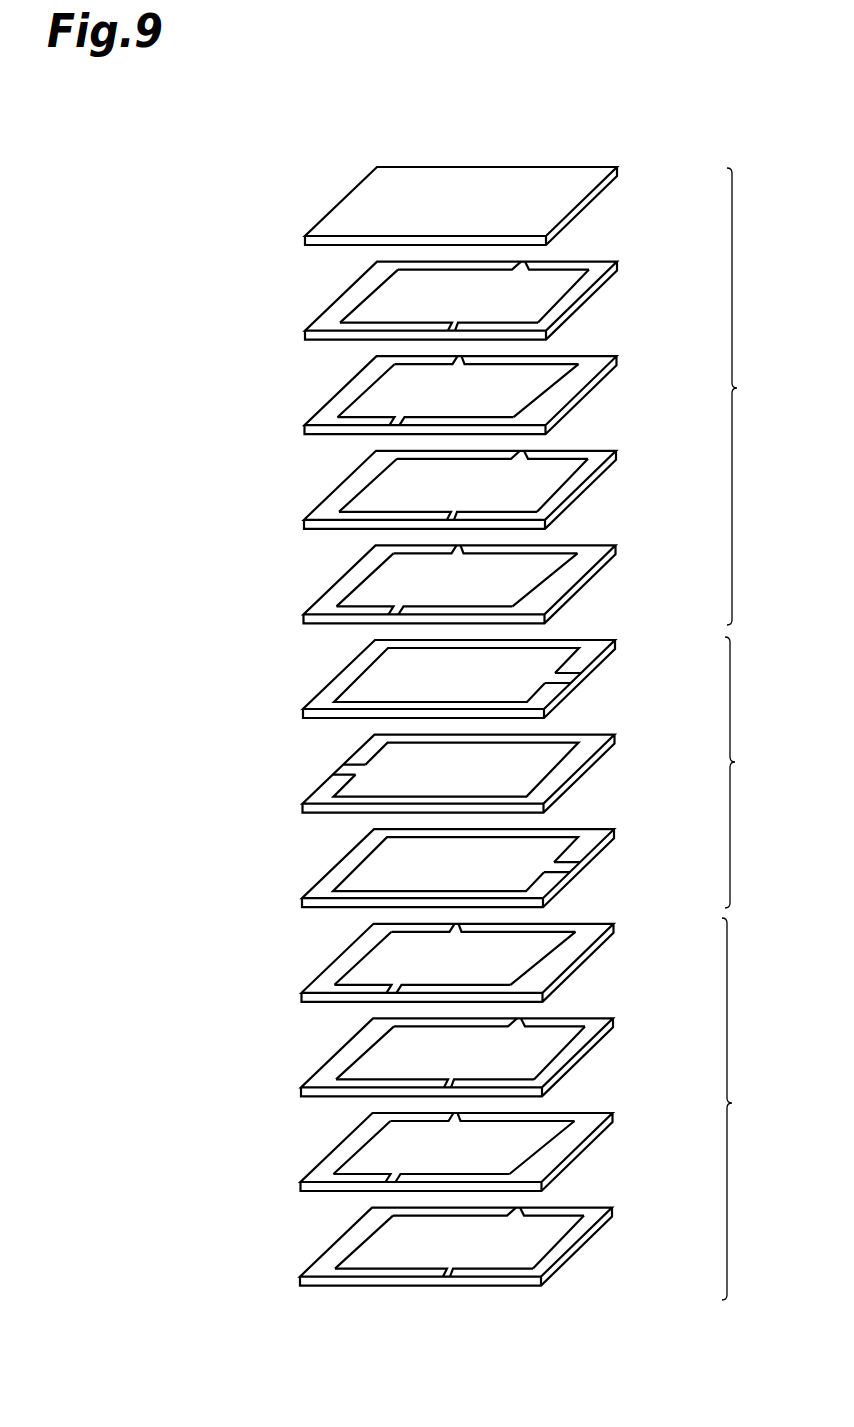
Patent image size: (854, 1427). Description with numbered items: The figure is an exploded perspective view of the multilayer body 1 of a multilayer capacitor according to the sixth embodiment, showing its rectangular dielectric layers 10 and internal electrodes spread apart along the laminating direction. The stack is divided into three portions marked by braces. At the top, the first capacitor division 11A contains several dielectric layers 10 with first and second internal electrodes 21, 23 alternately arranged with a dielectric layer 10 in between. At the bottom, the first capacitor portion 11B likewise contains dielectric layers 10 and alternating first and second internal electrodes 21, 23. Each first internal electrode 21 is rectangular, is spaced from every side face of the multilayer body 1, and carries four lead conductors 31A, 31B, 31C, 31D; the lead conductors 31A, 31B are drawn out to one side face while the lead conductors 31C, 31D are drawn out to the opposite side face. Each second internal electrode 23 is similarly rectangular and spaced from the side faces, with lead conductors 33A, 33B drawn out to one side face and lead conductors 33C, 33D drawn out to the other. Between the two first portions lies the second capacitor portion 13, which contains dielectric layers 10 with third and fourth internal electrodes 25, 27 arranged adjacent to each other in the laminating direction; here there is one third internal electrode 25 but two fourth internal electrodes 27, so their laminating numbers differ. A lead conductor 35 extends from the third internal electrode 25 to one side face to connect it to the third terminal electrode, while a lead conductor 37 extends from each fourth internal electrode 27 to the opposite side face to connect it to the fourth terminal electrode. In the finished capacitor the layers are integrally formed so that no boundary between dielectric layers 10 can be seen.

The multilayer body 1 is at (653, 102).
The dielectric layer 10 is at (426, 726).
The first capacitor division 11A is at (765, 396).
The first capacitor portion 11B is at (758, 1109).
The second capacitor portion 13 is at (753, 772).
The first internal electrode 21 is at (497, 769).
The second internal electrode 23 is at (496, 769).
The third internal electrode 25 is at (493, 770).
The fourth internal electrode 27 is at (412, 769).
The lead conductor 31A is at (327, 801).
The lead conductor 31B is at (555, 795).
The lead conductor 31C is at (360, 748).
The lead conductor 31D is at (603, 744).
The lead conductor 33A is at (299, 797).
The lead conductor 33B is at (528, 791).
The lead conductor 33C is at (329, 747).
The lead conductor 33D is at (580, 742).
The lead conductor 35 is at (305, 763).
The lead conductor 37 is at (598, 768).